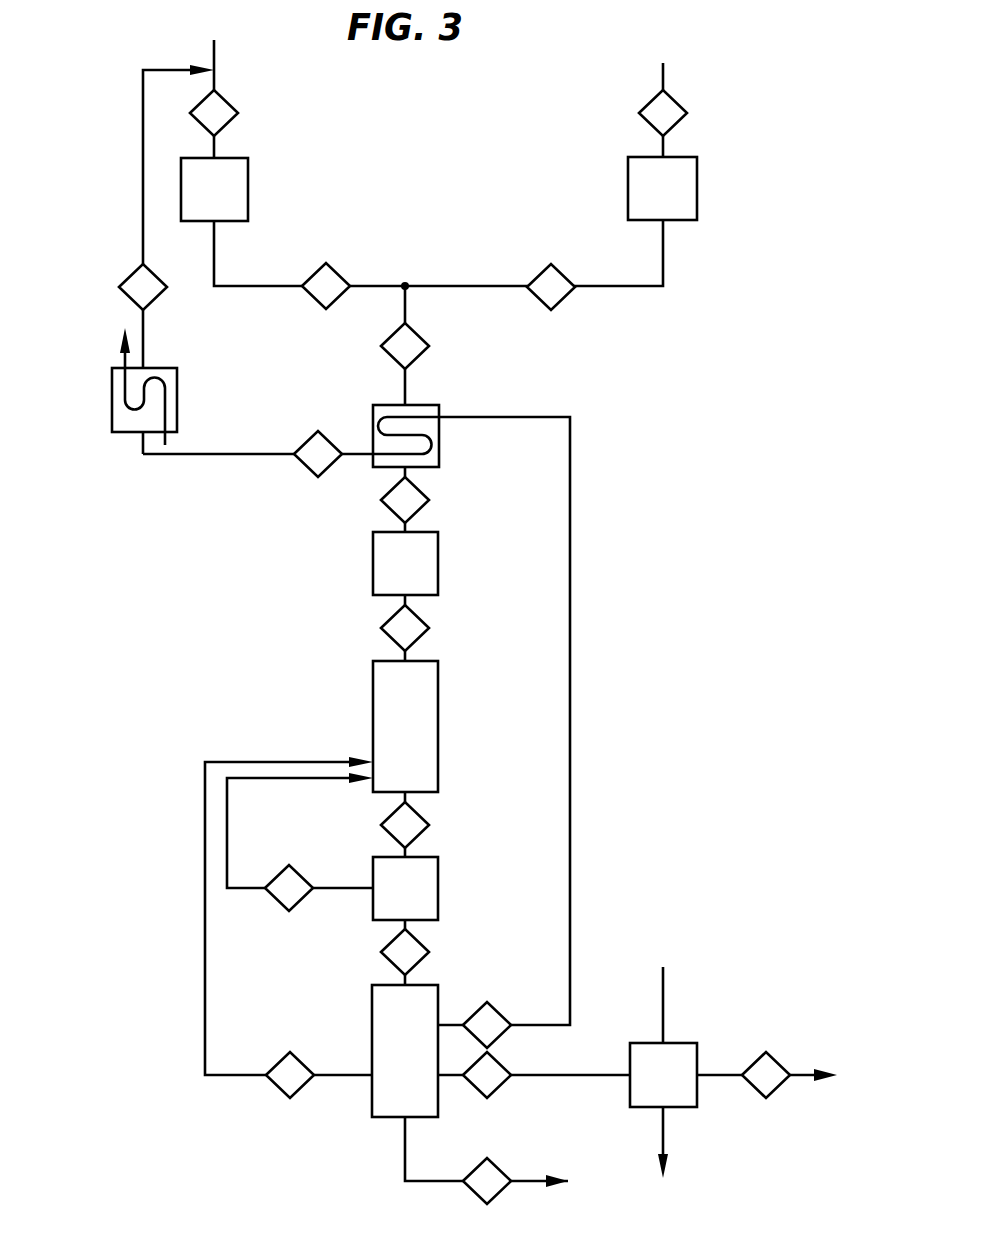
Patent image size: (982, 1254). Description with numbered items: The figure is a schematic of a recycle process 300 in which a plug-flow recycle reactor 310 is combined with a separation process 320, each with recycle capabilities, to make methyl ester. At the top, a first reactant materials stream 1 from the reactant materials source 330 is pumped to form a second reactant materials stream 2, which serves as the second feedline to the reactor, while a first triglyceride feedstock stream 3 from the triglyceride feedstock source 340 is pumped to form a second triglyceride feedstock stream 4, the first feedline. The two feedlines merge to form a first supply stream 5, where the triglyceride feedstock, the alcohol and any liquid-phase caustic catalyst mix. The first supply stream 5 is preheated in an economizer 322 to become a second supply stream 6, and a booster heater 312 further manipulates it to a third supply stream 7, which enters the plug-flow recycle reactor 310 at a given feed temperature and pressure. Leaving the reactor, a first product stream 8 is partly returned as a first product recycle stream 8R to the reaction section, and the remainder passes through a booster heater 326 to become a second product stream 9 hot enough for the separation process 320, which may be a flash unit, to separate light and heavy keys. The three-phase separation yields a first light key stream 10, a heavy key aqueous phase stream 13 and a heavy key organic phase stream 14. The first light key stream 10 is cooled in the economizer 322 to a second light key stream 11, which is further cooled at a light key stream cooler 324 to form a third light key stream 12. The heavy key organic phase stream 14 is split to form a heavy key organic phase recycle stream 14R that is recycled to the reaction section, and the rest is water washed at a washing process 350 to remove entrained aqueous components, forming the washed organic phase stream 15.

The recycle process 300 is at (745, 85).
The plug-flow recycle reactor 310 is at (438, 683).
The booster heater 312 is at (438, 555).
The separation process 320 is at (372, 1010).
The economizer 322 is at (373, 428).
The light key stream cooler 324 is at (112, 396).
The booster heater 326 is at (438, 880).
The reactant materials source 330 is at (248, 181).
The triglyceride feedstock source 340 is at (697, 178).
The washing process 350 is at (683, 1043).
The first reactant materials stream 1 is at (214, 113).
The second reactant materials stream 2 is at (326, 286).
The first triglyceride feedstock stream 3 is at (663, 113).
The second triglyceride feedstock stream 4 is at (551, 287).
The first supply stream 5 is at (405, 346).
The second supply stream 6 is at (405, 500).
The third supply stream 7 is at (405, 628).
The first product stream 8 is at (405, 825).
The first product recycle stream 8R is at (289, 888).
The second product stream 9 is at (405, 952).
The first light key stream 10 is at (487, 1025).
The second light key stream 11 is at (318, 454).
The third light key stream 12 is at (143, 287).
The heavy key aqueous phase stream 13 is at (487, 1181).
The heavy key organic phase stream 14 is at (487, 1075).
The heavy key organic phase recycle stream 14R is at (290, 1075).
The washed organic phase stream 15 is at (766, 1075).